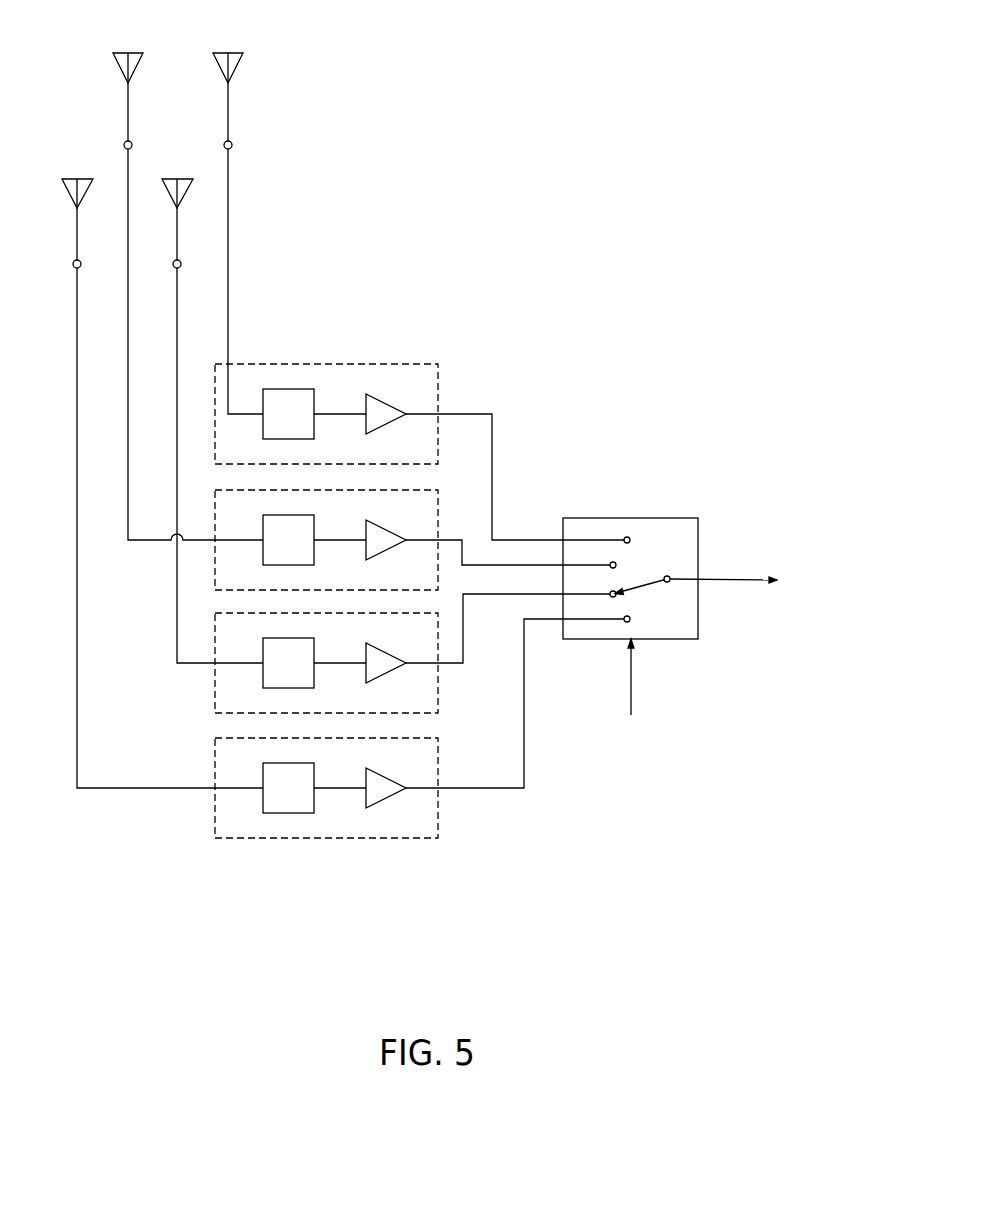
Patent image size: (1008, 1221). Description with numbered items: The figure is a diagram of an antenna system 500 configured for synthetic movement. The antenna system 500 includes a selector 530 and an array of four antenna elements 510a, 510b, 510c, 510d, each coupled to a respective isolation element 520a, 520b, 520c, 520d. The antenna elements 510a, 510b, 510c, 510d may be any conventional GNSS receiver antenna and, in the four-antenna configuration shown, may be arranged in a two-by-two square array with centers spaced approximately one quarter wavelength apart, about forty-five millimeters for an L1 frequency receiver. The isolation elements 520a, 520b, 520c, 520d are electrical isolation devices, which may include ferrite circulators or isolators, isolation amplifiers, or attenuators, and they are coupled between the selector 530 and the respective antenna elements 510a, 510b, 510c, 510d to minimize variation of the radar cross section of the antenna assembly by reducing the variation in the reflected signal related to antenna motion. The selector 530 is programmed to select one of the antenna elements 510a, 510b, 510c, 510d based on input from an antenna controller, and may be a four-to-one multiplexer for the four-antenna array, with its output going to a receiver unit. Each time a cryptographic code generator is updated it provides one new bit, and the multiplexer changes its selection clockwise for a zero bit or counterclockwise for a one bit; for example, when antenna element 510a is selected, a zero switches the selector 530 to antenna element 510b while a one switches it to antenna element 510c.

The antenna system 500 is at (472, 462).
The antenna element 510a is at (140, 54).
The antenna element 510b is at (240, 54).
The antenna element 510c is at (85, 179).
The antenna element 510d is at (185, 179).
The isolation element 520a is at (438, 365).
The isolation element 520b is at (438, 492).
The isolation element 520c is at (438, 700).
The isolation element 520d is at (438, 758).
The selector 530 is at (680, 518).